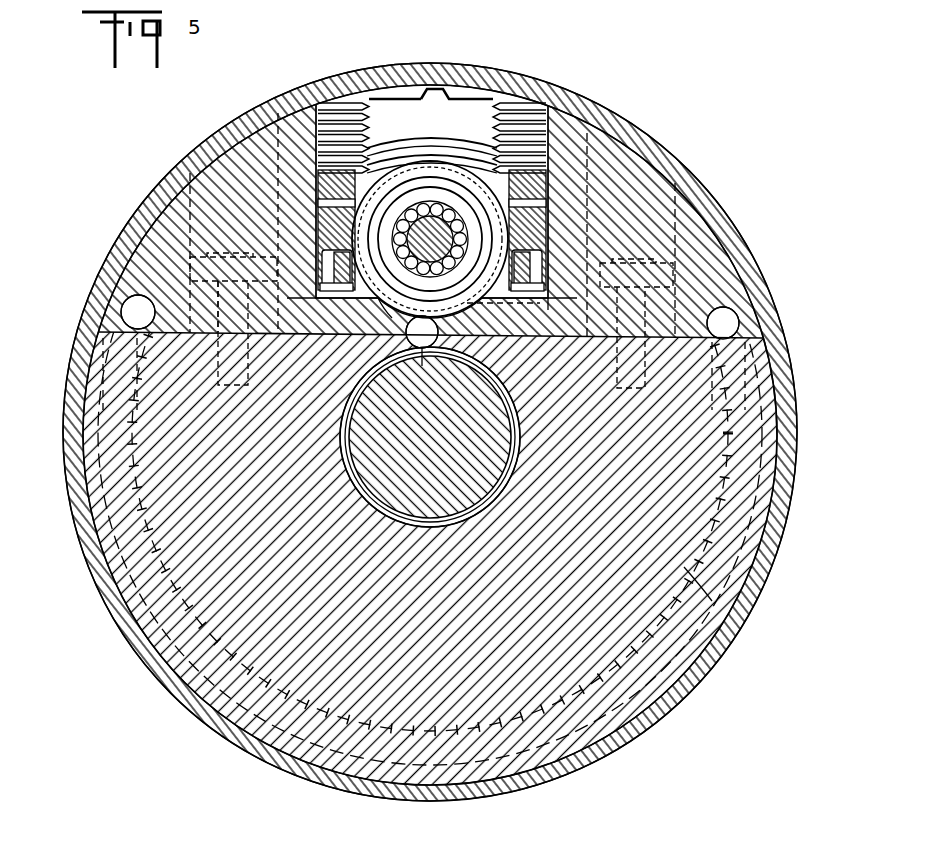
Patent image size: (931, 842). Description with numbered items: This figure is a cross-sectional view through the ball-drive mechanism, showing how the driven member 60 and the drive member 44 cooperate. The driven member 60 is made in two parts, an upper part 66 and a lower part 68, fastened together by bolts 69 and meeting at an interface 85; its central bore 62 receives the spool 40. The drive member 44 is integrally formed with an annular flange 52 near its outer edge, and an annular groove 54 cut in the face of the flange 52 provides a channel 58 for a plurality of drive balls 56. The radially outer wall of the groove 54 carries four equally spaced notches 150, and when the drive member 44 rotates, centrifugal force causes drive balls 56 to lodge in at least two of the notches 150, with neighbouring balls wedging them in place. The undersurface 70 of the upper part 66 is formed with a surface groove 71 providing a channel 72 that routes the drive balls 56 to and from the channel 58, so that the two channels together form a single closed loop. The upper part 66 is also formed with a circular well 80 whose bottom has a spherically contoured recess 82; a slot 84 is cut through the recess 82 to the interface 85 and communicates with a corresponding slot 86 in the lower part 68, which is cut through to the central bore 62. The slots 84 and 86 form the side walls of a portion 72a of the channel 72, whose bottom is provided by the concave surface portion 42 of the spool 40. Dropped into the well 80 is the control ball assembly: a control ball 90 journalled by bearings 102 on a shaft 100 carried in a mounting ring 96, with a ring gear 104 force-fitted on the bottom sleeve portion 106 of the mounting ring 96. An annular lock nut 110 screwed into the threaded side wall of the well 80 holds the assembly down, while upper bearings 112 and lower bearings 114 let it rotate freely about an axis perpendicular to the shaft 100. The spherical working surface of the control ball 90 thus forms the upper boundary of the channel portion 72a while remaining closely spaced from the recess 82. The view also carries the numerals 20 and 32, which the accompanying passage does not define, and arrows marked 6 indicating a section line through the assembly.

The compressor assembly 20 is at (162, 128).
The outer housing 32 is at (160, 676).
The upper part 66 is at (692, 246).
The driven member 60 is at (120, 566).
The channel 72 is at (156, 328).
The channel 58 is at (392, 94).
The annular groove 54 is at (503, 722).
The lower part 68 is at (684, 567).
The drive member 44 is at (491, 96).
The annular flange 52 is at (405, 92).
The notches 150 is at (446, 92).
The circular well 80 is at (522, 148).
The control ball 90 is at (428, 162).
The shaft 100 is at (452, 211).
The bearings 102 is at (414, 211).
The upper bearings 112 is at (320, 226).
The ring gear 104 is at (323, 272).
The lower bearings 114 is at (321, 291).
The mounting ring 96 is at (548, 229).
The annular lock nut 110 is at (548, 190).
The bottom sleeve portion 106 is at (546, 266).
The spherically contoured recess 82 is at (362, 301).
The slot 84 is at (392, 322).
The channel portion 72a is at (454, 321).
The interface 85 is at (548, 331).
The slot 86 is at (400, 341).
The drive balls 56 is at (422, 352).
The surface groove 71 is at (140, 296).
The bolts 69 is at (233, 256).
The undersurface 70 is at (250, 330).
The spool 40 is at (480, 418).
The central bore 62 is at (497, 511).
The concave surface portion 42 is at (360, 481).
The section line 6- 6 is at (56, 332).